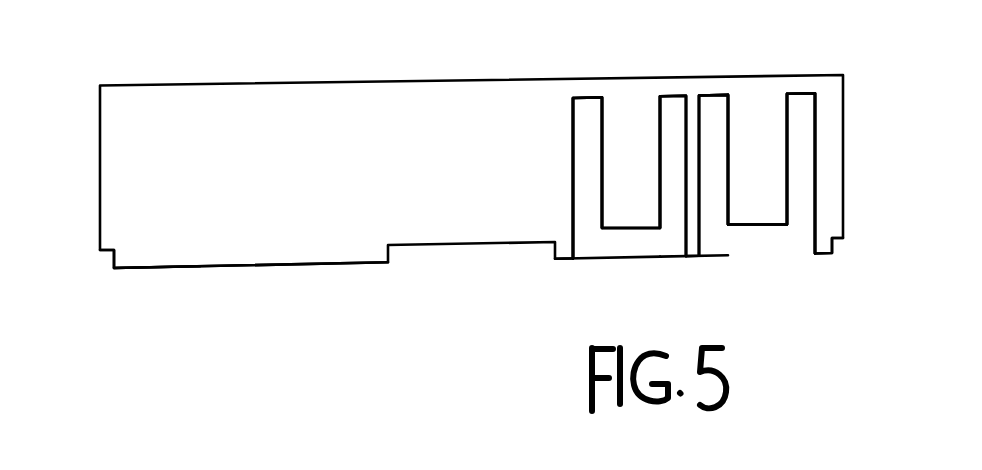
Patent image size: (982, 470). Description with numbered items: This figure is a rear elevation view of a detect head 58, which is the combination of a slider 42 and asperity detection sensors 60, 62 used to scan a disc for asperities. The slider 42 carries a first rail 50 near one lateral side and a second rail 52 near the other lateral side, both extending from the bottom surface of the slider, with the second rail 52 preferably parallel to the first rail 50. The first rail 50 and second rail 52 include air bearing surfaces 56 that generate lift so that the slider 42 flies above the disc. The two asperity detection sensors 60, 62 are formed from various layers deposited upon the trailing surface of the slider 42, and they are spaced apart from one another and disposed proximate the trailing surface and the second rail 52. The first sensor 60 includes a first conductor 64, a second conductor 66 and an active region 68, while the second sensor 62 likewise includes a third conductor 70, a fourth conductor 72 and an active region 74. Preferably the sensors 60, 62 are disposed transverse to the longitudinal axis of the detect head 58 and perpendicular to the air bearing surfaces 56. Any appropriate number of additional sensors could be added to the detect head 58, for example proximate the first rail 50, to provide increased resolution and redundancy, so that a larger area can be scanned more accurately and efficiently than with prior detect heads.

The slider 42 is at (173, 86).
The first rail 50 is at (155, 268).
The second rail 52 is at (600, 258).
The air bearing surfaces 56 is at (277, 267).
The detect head 58 is at (543, 53).
The asperity detection sensor 60 is at (572, 198).
The asperity detection sensor 62 is at (815, 185).
The first conductor 64 is at (572, 147).
The second conductor 66 is at (660, 143).
The active region 68 is at (627, 227).
The third conductor 70 is at (728, 116).
The fourth conductor 72 is at (815, 147).
The active region 74 is at (747, 223).